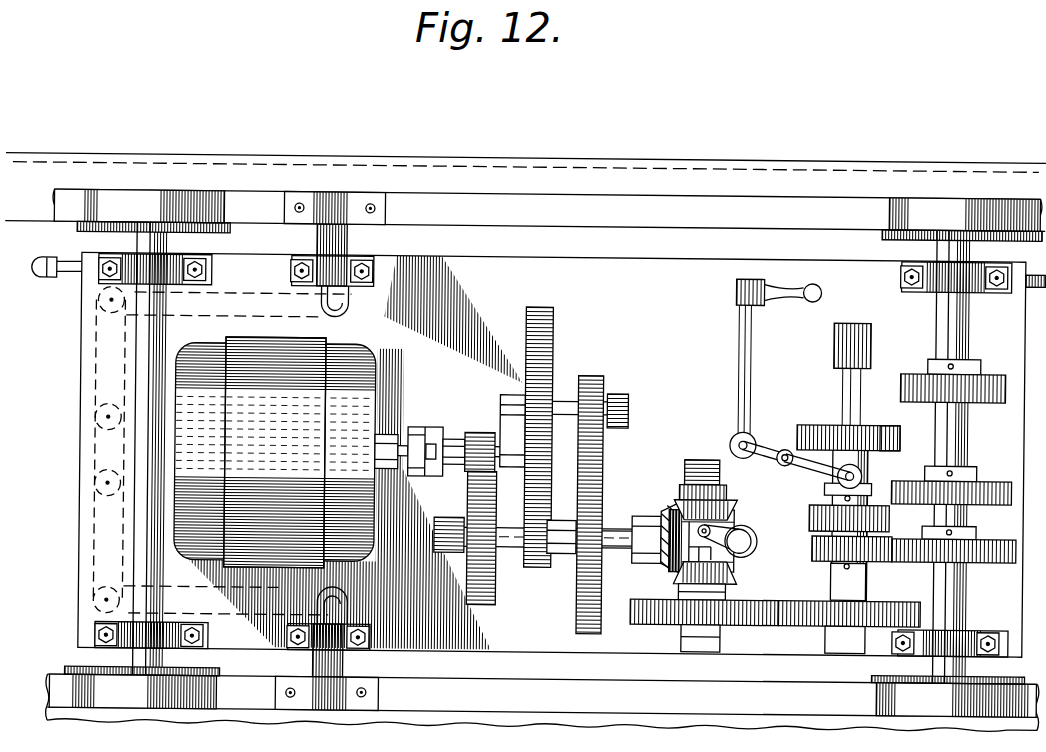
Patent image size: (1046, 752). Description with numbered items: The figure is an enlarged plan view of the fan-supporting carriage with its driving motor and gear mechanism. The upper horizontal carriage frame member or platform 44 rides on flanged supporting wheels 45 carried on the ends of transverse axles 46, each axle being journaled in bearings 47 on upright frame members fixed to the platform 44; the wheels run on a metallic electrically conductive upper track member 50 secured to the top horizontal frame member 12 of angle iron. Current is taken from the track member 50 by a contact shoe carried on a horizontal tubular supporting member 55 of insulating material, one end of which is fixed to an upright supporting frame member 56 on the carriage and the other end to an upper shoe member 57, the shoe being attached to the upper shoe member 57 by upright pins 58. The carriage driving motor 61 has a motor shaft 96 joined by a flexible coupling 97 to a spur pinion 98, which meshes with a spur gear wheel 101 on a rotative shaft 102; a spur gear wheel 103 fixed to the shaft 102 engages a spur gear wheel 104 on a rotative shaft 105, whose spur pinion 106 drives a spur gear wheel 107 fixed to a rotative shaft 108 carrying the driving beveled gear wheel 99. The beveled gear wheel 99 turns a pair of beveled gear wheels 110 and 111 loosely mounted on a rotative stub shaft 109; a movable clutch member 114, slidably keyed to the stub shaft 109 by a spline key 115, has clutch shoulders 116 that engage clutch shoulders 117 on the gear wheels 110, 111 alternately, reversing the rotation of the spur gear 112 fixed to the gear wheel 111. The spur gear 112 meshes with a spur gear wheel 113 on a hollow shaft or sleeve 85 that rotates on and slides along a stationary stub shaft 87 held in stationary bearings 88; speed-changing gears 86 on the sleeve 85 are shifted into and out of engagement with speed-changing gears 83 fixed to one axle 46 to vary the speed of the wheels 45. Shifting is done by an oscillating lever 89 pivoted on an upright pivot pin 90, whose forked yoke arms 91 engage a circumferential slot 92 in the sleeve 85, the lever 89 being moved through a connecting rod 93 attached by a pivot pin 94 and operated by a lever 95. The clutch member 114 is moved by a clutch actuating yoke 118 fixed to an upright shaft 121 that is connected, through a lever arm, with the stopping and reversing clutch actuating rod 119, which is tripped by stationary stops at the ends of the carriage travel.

The top horizontal frame member 12 is at (728, 178).
The upper horizontal carriage frame member or platform 44 is at (538, 270).
The flanged supporting wheels 45 is at (133, 207).
The transverse axles 46 is at (143, 246).
The bearings 47 is at (157, 267).
The upper track member 50 is at (681, 208).
The horizontal tubular supporting member 55 is at (350, 248).
The upright supporting frame member 56 is at (292, 276).
The upper shoe member 57 is at (344, 196).
The upright pins 58 is at (297, 206).
The carriage driving motor 61 is at (347, 375).
The speed-changing gears 83 is at (915, 370).
The hollow shaft or sleeve 85 is at (838, 421).
The speed-changing gears 86 is at (897, 426).
The stationary stub shaft 87 is at (840, 375).
The stationary bearings 88 is at (838, 332).
The oscillating lever 89 is at (768, 428).
The upright pivot pin 90 is at (790, 432).
The forked yoke arms 91 is at (815, 470).
The circumferential slot 92 is at (865, 475).
The connecting rod 93 is at (738, 340).
The pivot pin 94 is at (740, 430).
The lever 95 is at (783, 290).
The motor shaft 96 is at (406, 430).
The flexible coupling 97 is at (428, 433).
The spur pinion 98 is at (481, 433).
The driving beveled gear wheel 99 is at (678, 512).
The spur gear wheel 101 is at (494, 606).
The rotative shaft 102 is at (508, 548).
The spur gear wheel 103 is at (545, 570).
The spur gear wheel 104 is at (548, 350).
The rotative shaft 105 is at (560, 402).
The spur pinion 106 is at (600, 385).
The spur gear wheel 107 is at (607, 460).
The rotative shaft 108 is at (615, 520).
The rotative stub shaft 109 is at (663, 570).
The beveled gear wheel 110 is at (684, 466).
The beveled gear wheel 111 is at (733, 575).
The spur gear 112 is at (734, 627).
The spur gear wheel 113 is at (808, 627).
The movable clutch member 114 is at (728, 522).
The spline key 115 is at (752, 538).
The clutch shoulders 116 is at (730, 497).
The clutch shoulders 117 is at (727, 560).
The clutch actuating yoke 118 is at (727, 530).
The stopping and reversing clutch actuating rod 119 is at (43, 286).
The upright shaft 121 is at (748, 545).